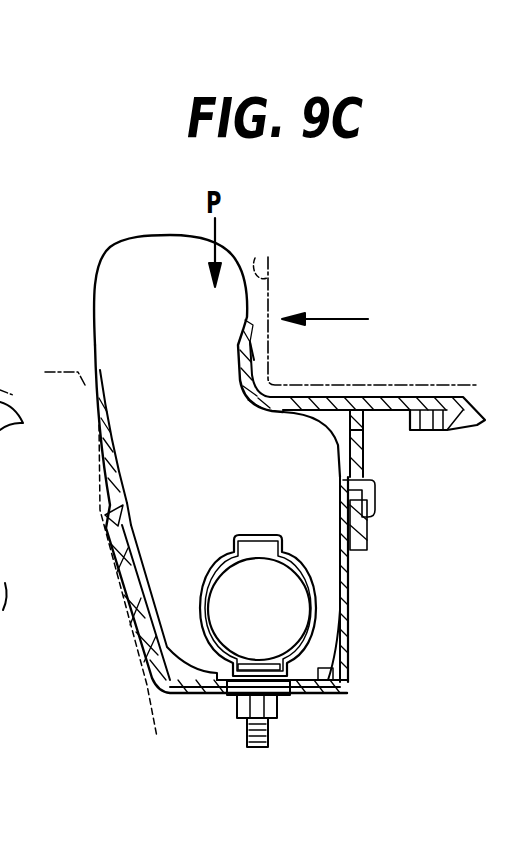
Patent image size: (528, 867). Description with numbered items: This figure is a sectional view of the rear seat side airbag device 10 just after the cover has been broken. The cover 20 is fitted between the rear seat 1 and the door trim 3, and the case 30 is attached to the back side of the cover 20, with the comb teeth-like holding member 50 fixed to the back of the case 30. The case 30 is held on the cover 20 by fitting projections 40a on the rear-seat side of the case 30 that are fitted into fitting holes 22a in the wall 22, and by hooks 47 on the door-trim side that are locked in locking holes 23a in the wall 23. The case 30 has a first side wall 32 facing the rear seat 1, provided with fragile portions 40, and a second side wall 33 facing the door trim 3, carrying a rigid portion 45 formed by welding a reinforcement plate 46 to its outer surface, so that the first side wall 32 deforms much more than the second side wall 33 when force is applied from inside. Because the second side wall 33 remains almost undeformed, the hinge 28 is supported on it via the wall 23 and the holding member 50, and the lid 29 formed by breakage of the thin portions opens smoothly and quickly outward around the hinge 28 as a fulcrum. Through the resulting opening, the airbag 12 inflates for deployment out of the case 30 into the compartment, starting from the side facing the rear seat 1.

The rear seat side airbag device 10 is at (92, 248).
The airbag 12 is at (160, 235).
The door trim 3 is at (262, 250).
The rear seat 1 is at (78, 372).
The cover 20 is at (318, 386).
The lid 29 is at (262, 372).
The hinge 28 is at (273, 413).
The locking hole 23a is at (366, 478).
The hook 47 is at (378, 499).
The wall 23 is at (367, 530).
The reinforcement plate 46 is at (352, 572).
The rigid portion 45 is at (399, 579).
The second side wall 33 is at (348, 627).
The case 30 is at (340, 698).
The holding member 50 is at (187, 693).
The wall 22 is at (105, 485).
The fitting hole 22a is at (100, 519).
The fragile portion 40 is at (88, 560).
The fitting projection 40a is at (117, 582).
The first side wall 32 is at (137, 640).